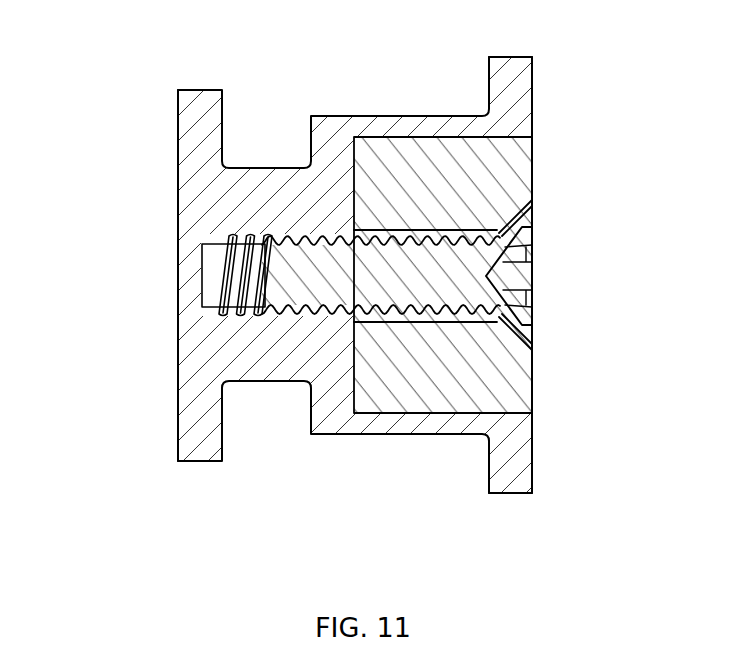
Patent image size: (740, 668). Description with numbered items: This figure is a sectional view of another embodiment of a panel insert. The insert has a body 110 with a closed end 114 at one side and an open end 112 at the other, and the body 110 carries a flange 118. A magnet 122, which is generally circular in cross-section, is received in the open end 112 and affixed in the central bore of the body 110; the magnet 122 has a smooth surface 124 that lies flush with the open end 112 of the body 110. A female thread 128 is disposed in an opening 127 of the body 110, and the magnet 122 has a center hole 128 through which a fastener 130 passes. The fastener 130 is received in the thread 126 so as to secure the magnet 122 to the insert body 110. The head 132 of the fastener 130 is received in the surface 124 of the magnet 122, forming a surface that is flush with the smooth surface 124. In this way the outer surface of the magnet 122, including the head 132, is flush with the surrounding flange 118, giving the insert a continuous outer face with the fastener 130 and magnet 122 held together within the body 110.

The body 110 is at (307, 350).
The open end 112 is at (498, 413).
The closed end 114 is at (177, 287).
The flange 118 is at (517, 474).
The magnet 122 is at (413, 372).
The smooth surface 124 is at (531, 167).
The thread 126 is at (240, 238).
The opening 127 is at (208, 284).
The female thread 128 is at (393, 230).
The fastener 130 is at (333, 283).
The head 132 is at (500, 268).